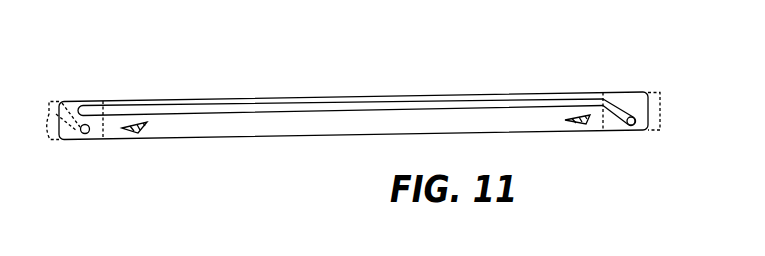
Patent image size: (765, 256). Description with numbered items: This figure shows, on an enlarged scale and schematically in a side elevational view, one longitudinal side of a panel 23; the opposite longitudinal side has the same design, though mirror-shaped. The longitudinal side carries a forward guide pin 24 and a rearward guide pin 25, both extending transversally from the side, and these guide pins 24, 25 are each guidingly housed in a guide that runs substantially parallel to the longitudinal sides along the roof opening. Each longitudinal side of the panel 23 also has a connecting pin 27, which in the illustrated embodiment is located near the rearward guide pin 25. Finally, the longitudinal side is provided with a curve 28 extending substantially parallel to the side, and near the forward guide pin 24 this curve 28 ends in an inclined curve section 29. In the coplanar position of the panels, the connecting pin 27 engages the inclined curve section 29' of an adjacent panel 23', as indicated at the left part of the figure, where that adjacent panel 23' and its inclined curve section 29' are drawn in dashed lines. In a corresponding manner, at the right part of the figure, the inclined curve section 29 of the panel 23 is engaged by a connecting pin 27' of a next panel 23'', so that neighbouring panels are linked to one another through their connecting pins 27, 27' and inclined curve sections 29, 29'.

The panel 23 is at (353, 96).
The adjacent panel 23' is at (58, 97).
The next panel 23'' is at (660, 81).
The forward guide pin 24 is at (579, 122).
The rearward guide pin 25 is at (136, 131).
The connecting pin 27 is at (72, 150).
The connecting pin of next panel 27' is at (620, 143).
The curve 28 is at (285, 107).
The inclined curve section 29 is at (612, 79).
The inclined curve section of adjacent panel 29' is at (83, 92).